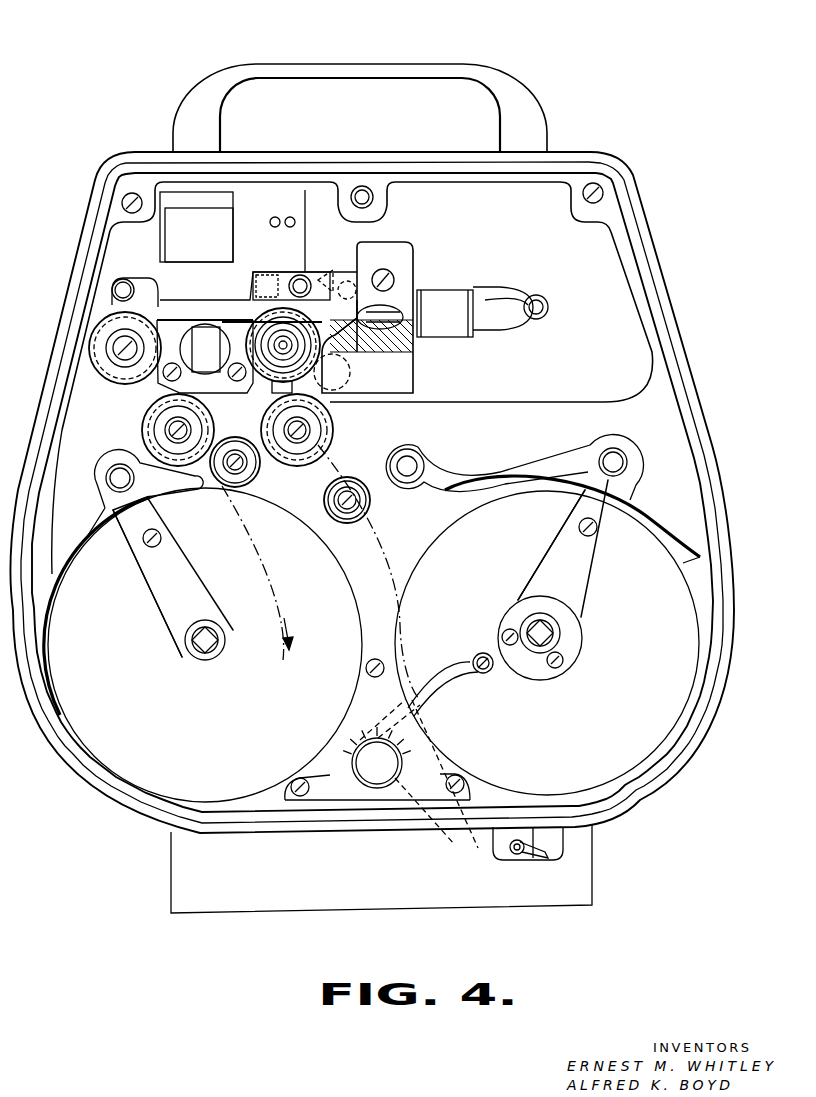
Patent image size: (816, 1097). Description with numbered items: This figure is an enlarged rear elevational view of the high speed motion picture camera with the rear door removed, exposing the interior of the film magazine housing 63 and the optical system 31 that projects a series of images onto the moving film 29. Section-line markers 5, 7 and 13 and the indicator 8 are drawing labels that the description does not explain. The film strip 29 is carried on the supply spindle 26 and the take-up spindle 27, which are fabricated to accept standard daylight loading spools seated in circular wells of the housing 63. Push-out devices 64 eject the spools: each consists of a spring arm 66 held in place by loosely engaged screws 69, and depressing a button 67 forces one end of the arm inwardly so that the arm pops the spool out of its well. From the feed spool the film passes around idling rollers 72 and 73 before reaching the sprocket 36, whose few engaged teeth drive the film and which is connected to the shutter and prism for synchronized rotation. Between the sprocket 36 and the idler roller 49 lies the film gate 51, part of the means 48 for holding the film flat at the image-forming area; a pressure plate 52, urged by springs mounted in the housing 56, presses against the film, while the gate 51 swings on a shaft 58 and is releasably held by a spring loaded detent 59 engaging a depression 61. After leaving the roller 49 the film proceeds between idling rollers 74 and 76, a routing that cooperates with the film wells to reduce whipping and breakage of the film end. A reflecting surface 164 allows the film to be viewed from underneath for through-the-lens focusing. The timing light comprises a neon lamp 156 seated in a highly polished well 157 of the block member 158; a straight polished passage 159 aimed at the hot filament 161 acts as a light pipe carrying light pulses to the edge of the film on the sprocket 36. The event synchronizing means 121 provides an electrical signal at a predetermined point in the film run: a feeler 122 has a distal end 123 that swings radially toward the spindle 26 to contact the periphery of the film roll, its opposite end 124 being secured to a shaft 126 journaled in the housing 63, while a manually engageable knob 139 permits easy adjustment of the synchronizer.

The optical system 31 is at (48, 266).
The film magazine unit housing 63 is at (690, 333).
The event synchronizing means 121 is at (375, 845).
The section line 5- 5 is at (258, 50).
The section line 7- 7 is at (630, 432).
The section line 13- 13 is at (343, 733).
The deck plate 8 is at (72, 432).
The film holding means 48 is at (110, 307).
The shaft 58 is at (123, 280).
The film gate 51 is at (258, 272).
The spring loaded detent 59 is at (315, 290).
The depression 61 is at (345, 285).
The housing 56 is at (177, 380).
The reflecting surface 164 is at (205, 340).
The idler roller 49 is at (92, 350).
The sprocket 36 is at (277, 383).
The pressure plate 52 is at (224, 321).
The block member 158 is at (410, 383).
The neon lamp 156 is at (397, 328).
The hot filament 161 is at (388, 308).
The well 157 is at (360, 340).
The straight passage 159 is at (312, 370).
The idling roller 74 is at (163, 432).
The idling roller 73 is at (322, 432).
The idling roller 76 is at (250, 470).
The idling roller 72 is at (348, 486).
The button 67 is at (108, 482).
The spring arm 66 is at (192, 571).
The push-out device 64 is at (147, 601).
The screw 69 is at (146, 545).
The take-up spindle 27 is at (196, 665).
The supply spindle 26 is at (570, 623).
The film 29 is at (402, 556).
The feeler 122 is at (443, 670).
The distal end 123 is at (492, 648).
The manually engageable knob 139 is at (362, 775).
The opposite end 124 is at (480, 850).
The shaft 126 is at (505, 852).